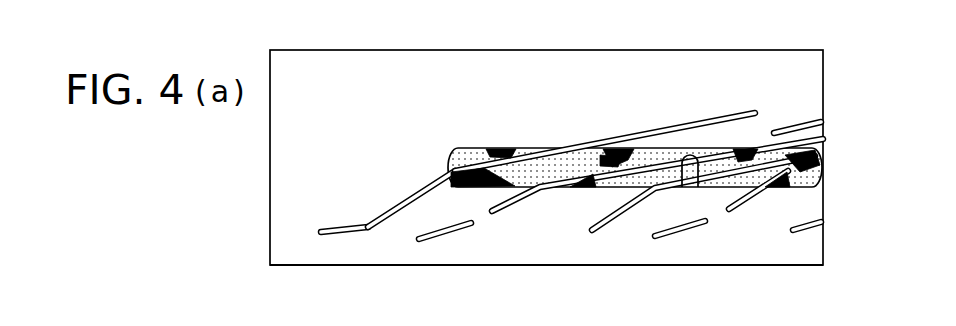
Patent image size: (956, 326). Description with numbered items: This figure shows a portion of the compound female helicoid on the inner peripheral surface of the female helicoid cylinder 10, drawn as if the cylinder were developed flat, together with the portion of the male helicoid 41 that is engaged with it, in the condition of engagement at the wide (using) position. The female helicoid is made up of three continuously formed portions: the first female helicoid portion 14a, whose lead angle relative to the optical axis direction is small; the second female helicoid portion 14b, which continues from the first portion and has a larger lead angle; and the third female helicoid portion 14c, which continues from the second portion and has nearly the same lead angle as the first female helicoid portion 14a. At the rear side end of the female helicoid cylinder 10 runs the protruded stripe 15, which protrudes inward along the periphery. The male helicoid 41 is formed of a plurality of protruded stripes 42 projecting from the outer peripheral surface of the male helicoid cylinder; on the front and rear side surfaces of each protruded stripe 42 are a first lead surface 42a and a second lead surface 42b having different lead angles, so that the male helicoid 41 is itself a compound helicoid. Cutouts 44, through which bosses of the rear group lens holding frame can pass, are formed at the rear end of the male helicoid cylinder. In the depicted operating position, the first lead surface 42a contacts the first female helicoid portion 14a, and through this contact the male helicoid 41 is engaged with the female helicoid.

The female helicoid cylinder 10 is at (333, 50).
The protruded stripe 15 is at (775, 266).
The male helicoid 41 is at (836, 170).
The protruded stripe 42 is at (473, 149).
The first lead surface 42a is at (540, 149).
The second lead surface 42b is at (610, 149).
The cutout 44 is at (684, 155).
The first female helicoid portion 14a is at (774, 133).
The second female helicoid portion 14b is at (500, 203).
The third female helicoid portion 14c is at (415, 240).